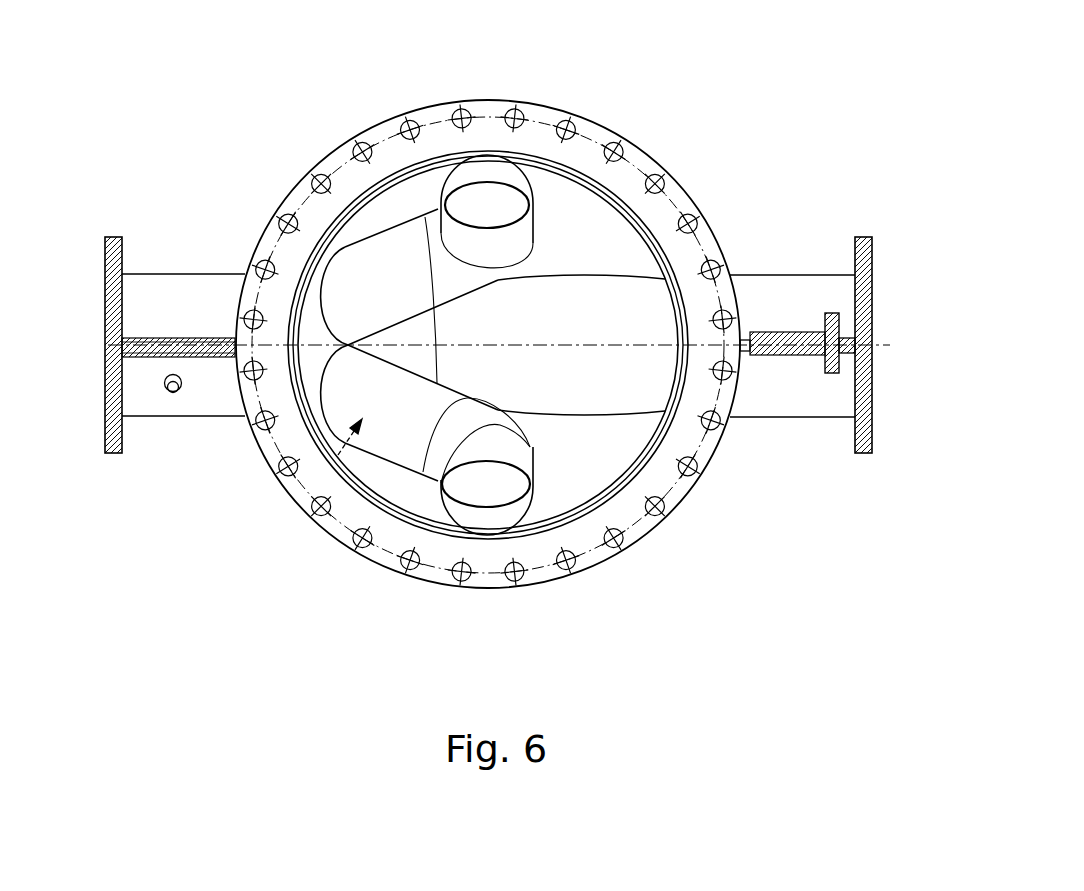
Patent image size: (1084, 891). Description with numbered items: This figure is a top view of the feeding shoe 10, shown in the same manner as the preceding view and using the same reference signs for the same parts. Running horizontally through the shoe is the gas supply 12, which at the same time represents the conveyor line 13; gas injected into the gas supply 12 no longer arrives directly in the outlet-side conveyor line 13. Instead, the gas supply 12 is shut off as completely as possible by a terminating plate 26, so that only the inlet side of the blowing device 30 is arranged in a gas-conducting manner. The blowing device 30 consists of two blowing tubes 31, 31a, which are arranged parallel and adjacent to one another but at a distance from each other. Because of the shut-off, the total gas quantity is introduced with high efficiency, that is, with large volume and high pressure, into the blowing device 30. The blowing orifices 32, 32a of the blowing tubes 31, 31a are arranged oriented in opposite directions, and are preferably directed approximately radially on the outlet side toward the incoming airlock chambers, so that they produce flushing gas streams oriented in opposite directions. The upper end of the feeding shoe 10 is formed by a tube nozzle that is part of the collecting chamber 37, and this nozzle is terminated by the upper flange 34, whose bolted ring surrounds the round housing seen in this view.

The feeding shoe 10 is at (693, 93).
The gas supply 12 is at (195, 407).
The conveyor line 13 is at (790, 402).
The terminating plate 26 is at (308, 278).
The blowing device 30 is at (338, 455).
The blowing tube 31 is at (403, 237).
The blowing tube 31a is at (400, 452).
The blowing orifice 32 is at (480, 152).
The blowing orifice 32a is at (492, 512).
The upper flange 34 is at (627, 515).
The collecting chamber 37 is at (620, 257).